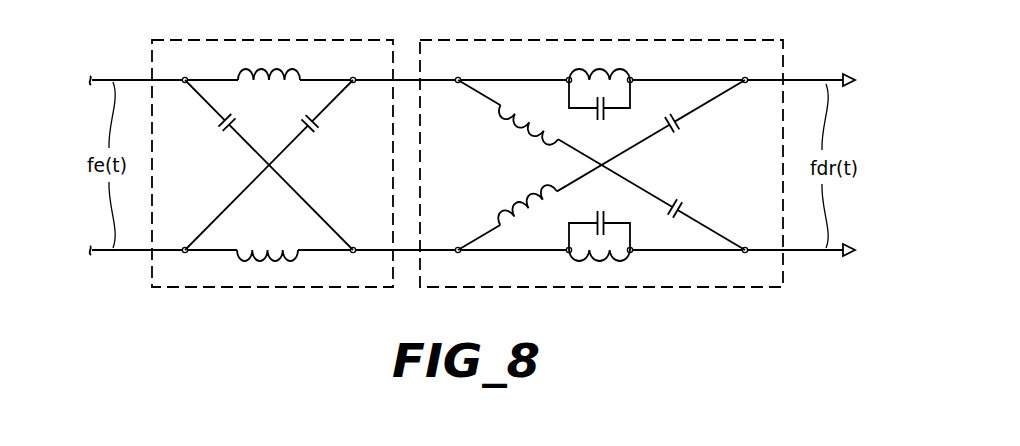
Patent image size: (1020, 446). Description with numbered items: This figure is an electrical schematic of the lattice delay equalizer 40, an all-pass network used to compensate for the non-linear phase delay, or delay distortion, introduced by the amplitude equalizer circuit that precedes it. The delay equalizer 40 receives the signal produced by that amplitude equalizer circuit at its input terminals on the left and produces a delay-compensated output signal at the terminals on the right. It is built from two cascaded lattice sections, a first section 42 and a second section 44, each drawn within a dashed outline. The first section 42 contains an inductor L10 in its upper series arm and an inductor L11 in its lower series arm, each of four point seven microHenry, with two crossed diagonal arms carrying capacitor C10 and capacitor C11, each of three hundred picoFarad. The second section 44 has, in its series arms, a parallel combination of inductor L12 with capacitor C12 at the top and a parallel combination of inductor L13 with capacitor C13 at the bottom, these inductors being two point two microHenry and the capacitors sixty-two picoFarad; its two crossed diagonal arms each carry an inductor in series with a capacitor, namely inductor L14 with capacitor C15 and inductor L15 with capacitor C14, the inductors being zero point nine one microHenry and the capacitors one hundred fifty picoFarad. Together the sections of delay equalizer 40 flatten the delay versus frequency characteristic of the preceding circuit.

The lattice delay equalizer 40 is at (467, 193).
The first section 42 is at (370, 288).
The second section 44 is at (665, 288).
The inductor L10 is at (269, 61).
The inductor L11 is at (267, 269).
The inductor L12 is at (599, 60).
The inductor L13 is at (599, 269).
The inductor L14 is at (518, 130).
The inductor L15 is at (517, 200).
The capacitor C10 is at (209, 133).
The capacitor C11 is at (324, 134).
The capacitor C12 is at (599, 114).
The capacitor C13 is at (599, 218).
The capacitor C14 is at (689, 135).
The capacitor C15 is at (690, 196).